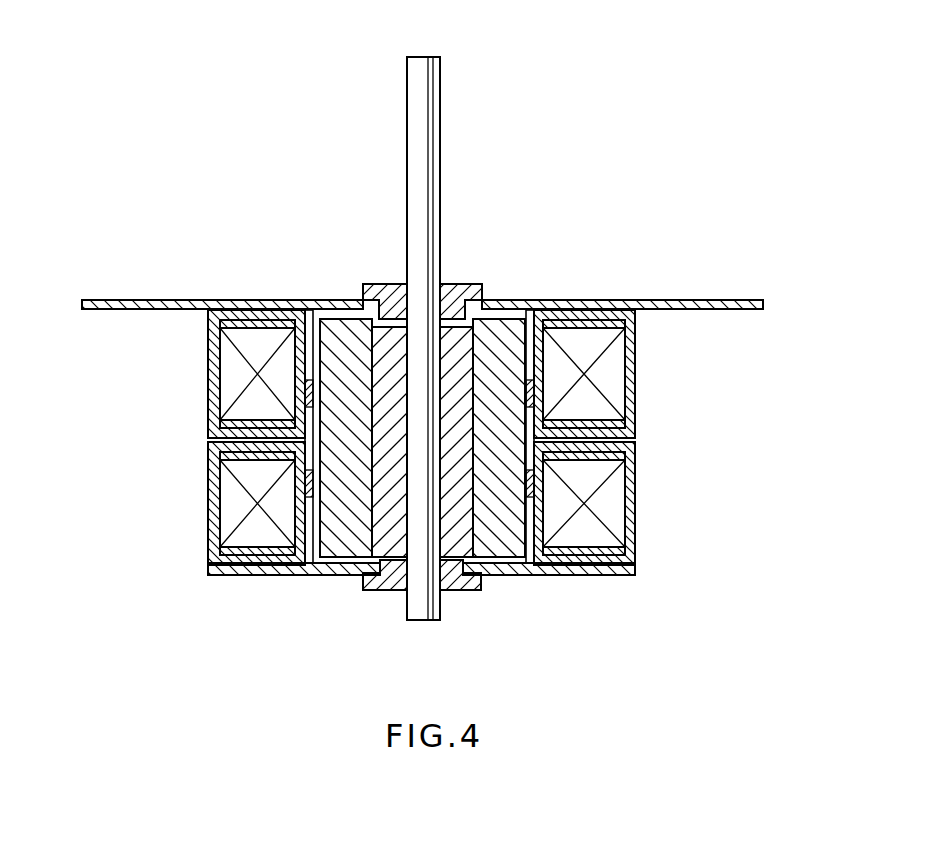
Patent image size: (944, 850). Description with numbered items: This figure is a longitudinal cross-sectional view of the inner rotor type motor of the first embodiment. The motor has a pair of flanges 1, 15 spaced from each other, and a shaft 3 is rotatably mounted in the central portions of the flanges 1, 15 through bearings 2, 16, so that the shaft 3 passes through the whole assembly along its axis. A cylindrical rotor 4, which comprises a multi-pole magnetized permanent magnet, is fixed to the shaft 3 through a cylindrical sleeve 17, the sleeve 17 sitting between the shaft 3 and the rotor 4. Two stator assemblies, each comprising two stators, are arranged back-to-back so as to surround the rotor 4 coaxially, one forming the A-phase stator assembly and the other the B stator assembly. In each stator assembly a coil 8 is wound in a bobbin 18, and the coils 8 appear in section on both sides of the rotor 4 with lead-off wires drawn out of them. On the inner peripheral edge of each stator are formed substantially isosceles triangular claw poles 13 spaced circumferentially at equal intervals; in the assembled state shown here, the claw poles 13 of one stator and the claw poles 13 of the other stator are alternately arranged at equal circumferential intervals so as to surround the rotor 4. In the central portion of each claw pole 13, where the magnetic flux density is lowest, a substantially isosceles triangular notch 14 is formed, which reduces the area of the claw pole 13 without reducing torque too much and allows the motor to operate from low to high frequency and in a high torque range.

The flange 1 is at (672, 300).
The bearing 2 is at (392, 285).
The shaft 3 is at (440, 182).
The cylindrical rotor 4 is at (498, 498).
The coil 8 is at (258, 347).
The claw pole 13 is at (308, 395).
The notch 14 is at (308, 357).
The flange 15 is at (530, 577).
The bearing 16 is at (377, 585).
The cylindrical sleeve 17 is at (453, 528).
The bobbin 18 is at (578, 323).